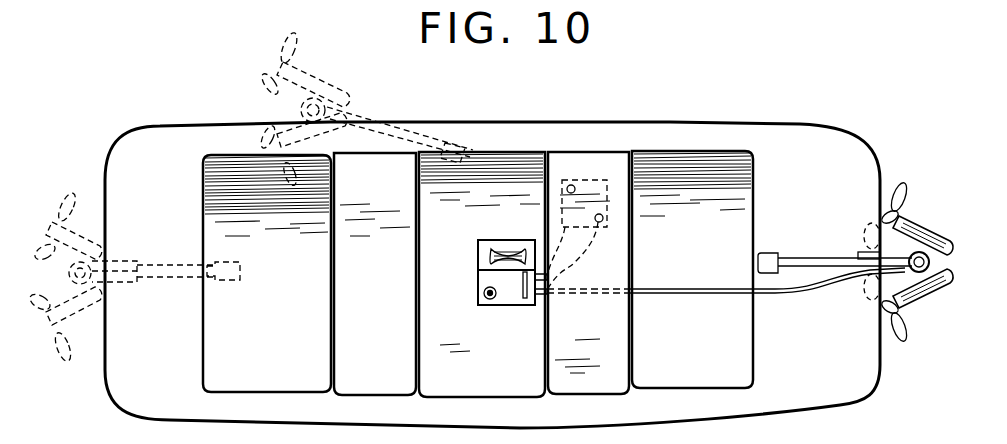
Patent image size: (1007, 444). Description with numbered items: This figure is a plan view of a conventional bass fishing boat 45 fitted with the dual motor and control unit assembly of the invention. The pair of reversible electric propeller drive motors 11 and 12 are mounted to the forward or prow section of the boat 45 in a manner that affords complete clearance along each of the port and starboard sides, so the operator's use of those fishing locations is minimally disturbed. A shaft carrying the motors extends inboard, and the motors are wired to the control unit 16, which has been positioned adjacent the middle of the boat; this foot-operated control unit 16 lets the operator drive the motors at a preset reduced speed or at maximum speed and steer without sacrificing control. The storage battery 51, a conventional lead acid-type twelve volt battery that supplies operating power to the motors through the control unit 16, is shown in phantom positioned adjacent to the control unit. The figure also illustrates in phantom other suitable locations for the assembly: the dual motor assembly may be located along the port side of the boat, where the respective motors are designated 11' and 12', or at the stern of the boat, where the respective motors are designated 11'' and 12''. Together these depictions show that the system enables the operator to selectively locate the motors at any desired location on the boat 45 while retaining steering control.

The bass fishing boat 45 is at (575, 128).
The control unit 16 is at (516, 290).
The storage battery 51 is at (600, 198).
The reversible electric motor 11 is at (919, 226).
The reversible electric motor 12 is at (922, 307).
The motor in port side location 11' is at (366, 97).
The motor in port side location 12' is at (319, 150).
The motor in stern location 11'' is at (136, 220).
The motor in stern location 12'' is at (64, 345).